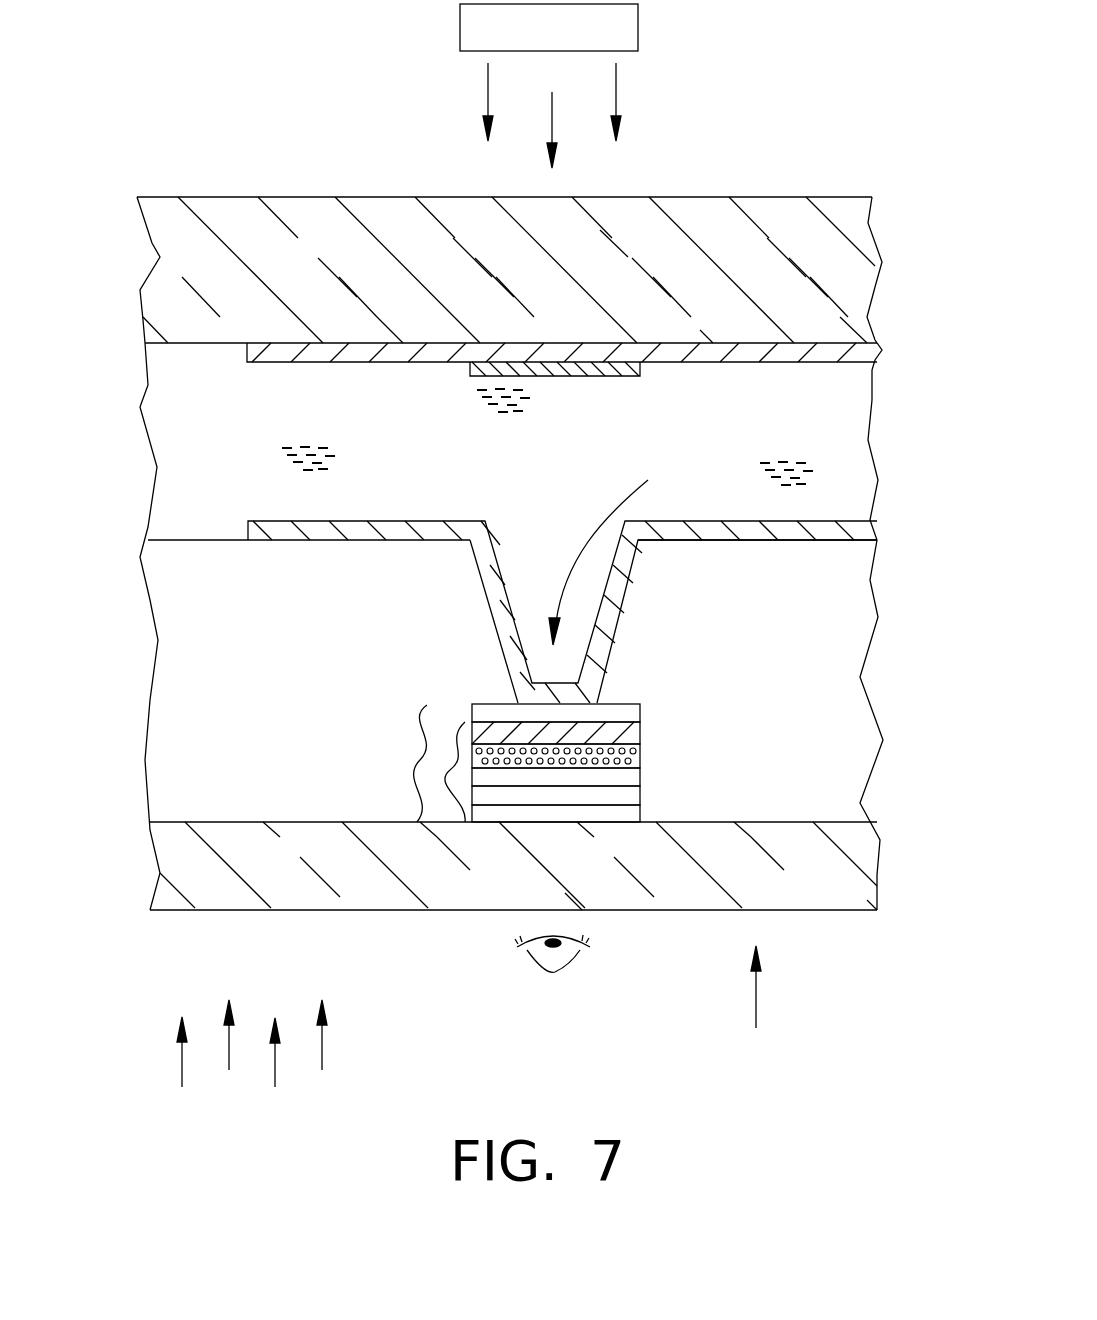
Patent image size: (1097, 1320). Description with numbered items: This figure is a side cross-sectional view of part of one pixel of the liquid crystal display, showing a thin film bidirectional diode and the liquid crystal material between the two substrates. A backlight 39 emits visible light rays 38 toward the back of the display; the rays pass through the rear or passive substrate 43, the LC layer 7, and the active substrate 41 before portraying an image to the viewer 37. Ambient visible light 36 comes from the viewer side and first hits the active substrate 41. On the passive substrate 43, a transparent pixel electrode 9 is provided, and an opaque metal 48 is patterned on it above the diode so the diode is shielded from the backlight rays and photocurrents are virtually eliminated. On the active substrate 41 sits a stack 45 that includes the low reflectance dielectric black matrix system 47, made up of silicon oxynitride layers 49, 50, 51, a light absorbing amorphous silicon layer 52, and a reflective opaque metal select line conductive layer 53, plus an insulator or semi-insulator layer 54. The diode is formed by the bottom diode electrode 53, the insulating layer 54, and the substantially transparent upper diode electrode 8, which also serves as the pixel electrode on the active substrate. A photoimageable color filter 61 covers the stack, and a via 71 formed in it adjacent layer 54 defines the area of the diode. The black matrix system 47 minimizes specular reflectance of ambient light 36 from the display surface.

The backlight 39 is at (628, 40).
The visible light rays 38 is at (488, 105).
The passive substrate 43 is at (837, 262).
The pixel electrode 9 is at (787, 345).
The metal 48 is at (600, 376).
The LC layer 7 is at (192, 438).
The via 71 is at (620, 549).
The upper diode electrode 8 is at (345, 537).
The color filter 61 is at (833, 582).
The insulator or semi-insulator layer 54 is at (637, 713).
The select line conductive layer 53 is at (622, 743).
The light absorbing layer 52 is at (640, 756).
The silicon oxynitride layer 51 is at (632, 777).
The silicon oxynitride layer 50 is at (640, 796).
The silicon oxynitride layer 49 is at (632, 817).
The stack 45 is at (423, 775).
The low reflectance dielectric black matrix system 47 is at (443, 775).
The active substrate 41 is at (823, 903).
The viewer 37 is at (565, 962).
The ambient visible light 36 is at (182, 1058).